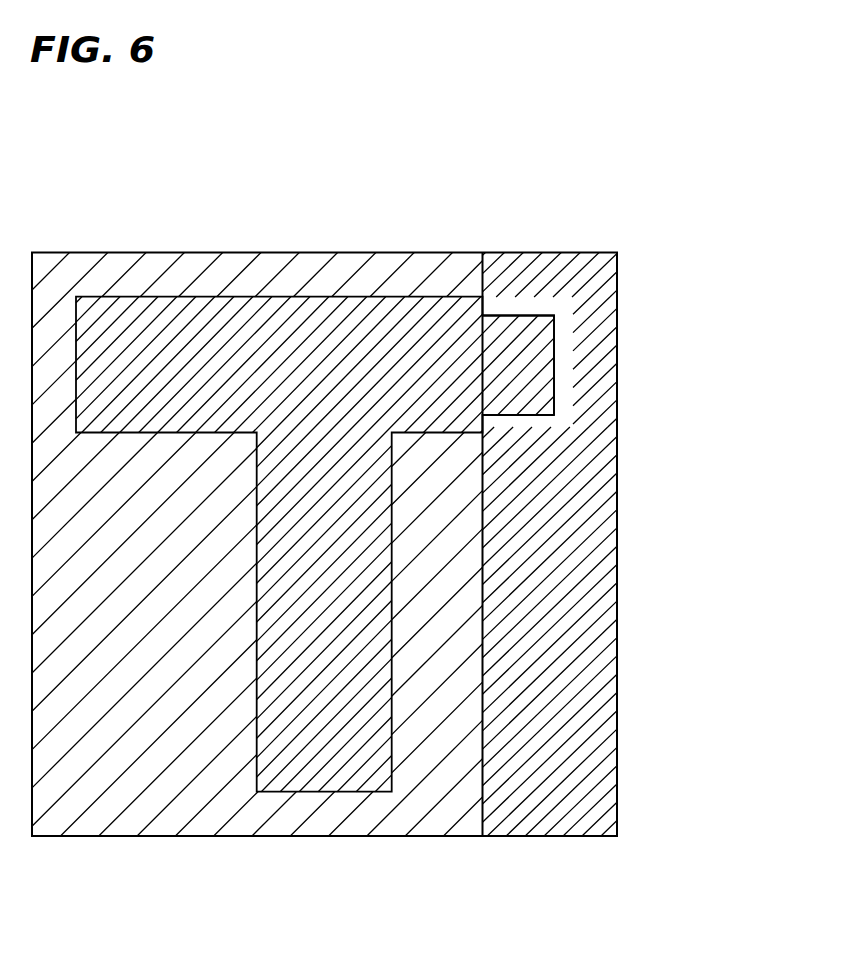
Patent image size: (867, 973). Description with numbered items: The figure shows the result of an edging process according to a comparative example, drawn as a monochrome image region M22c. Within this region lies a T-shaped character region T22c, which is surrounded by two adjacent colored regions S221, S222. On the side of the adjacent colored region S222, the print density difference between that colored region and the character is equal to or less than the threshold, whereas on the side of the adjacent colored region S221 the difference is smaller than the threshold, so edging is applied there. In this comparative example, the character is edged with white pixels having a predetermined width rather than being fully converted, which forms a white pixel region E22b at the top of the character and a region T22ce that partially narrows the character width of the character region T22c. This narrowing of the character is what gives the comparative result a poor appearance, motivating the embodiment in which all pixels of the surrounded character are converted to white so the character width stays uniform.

The adjacent colored region S222 is at (393, 252).
The adjacent colored region S221 is at (617, 466).
The white pixel region E22b is at (551, 279).
The character region T22c is at (113, 292).
The monochrome image region M22c is at (252, 252).
The region that partially narrows a character width T22ce is at (536, 313).